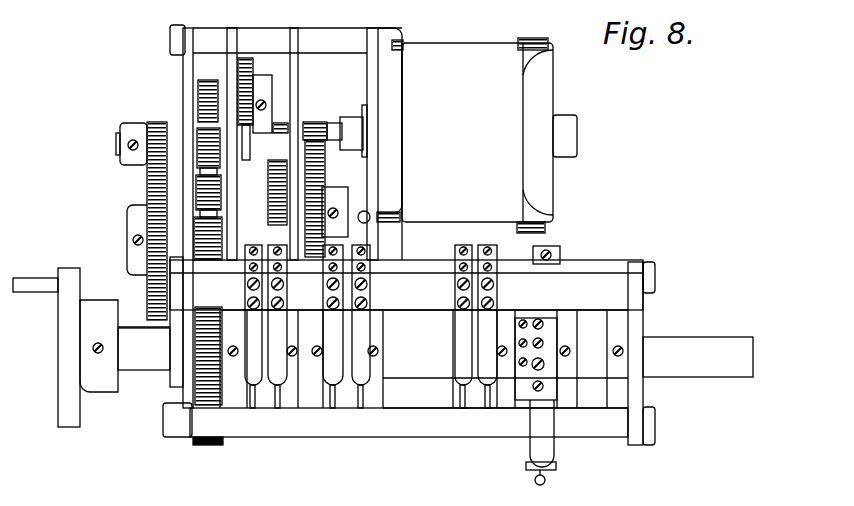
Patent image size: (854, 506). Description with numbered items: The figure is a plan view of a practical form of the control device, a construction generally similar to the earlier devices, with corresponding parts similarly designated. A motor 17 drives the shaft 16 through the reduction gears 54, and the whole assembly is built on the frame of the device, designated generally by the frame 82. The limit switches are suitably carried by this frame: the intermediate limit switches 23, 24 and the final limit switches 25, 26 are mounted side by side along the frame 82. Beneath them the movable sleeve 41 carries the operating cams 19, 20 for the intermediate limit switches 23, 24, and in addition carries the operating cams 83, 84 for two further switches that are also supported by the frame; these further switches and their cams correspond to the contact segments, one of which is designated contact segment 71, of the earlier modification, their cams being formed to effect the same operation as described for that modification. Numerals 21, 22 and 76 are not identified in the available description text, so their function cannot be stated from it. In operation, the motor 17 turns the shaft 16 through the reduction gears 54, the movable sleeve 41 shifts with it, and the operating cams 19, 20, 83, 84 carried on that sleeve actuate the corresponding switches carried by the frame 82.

The reduction gears 54 is at (193, 115).
The motor 17 is at (508, 93).
The frame 82 is at (608, 287).
The shaft 16 is at (677, 365).
The movable sleeve 41 is at (427, 363).
The final limit switch 26 is at (253, 315).
The final limit switch 25 is at (277, 315).
The contact finger 76 is at (333, 315).
The contact segment 71 is at (361, 315).
The intermediate limit switch 24 is at (463, 315).
The intermediate limit switch 23 is at (487, 315).
The contact 22 is at (252, 403).
The contact 21 is at (277, 403).
The operating cam 84 is at (333, 403).
The operating cam 83 is at (362, 405).
The operating cam 20 is at (461, 400).
The operating cam 19 is at (487, 403).